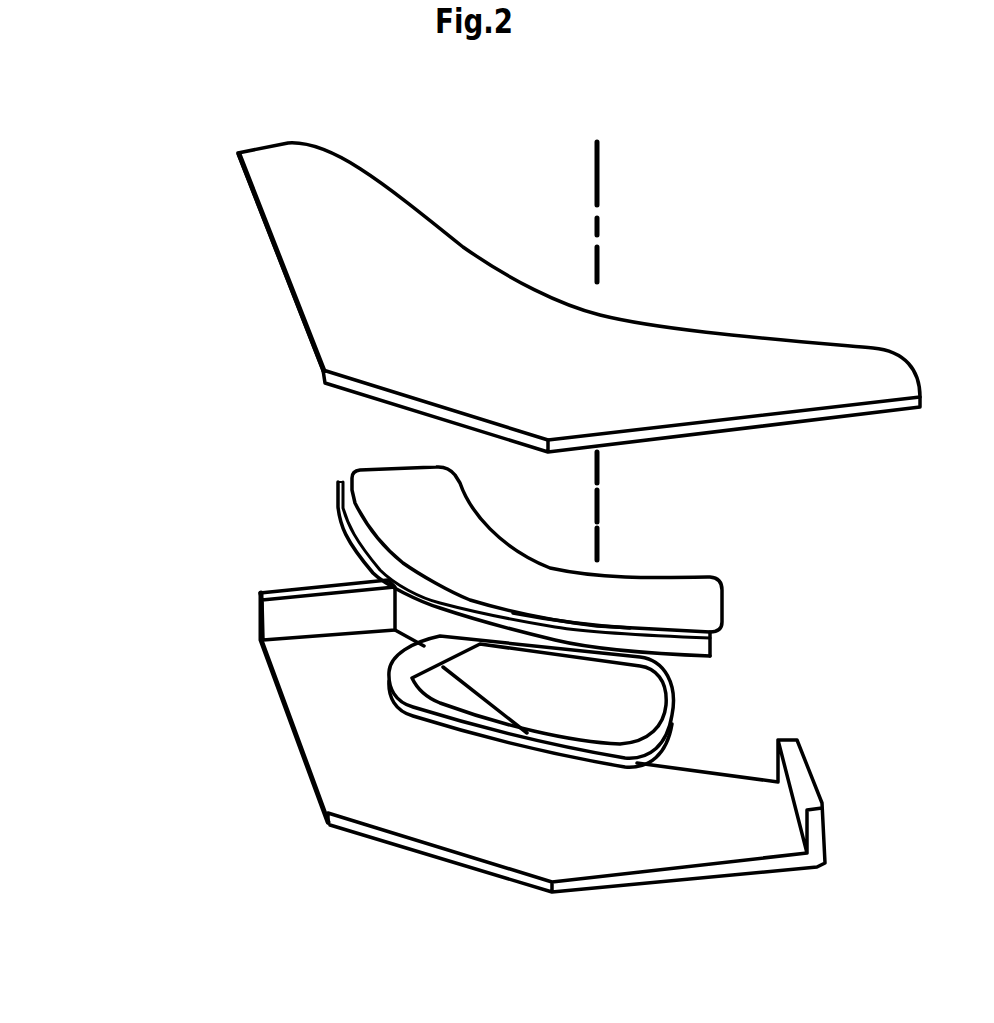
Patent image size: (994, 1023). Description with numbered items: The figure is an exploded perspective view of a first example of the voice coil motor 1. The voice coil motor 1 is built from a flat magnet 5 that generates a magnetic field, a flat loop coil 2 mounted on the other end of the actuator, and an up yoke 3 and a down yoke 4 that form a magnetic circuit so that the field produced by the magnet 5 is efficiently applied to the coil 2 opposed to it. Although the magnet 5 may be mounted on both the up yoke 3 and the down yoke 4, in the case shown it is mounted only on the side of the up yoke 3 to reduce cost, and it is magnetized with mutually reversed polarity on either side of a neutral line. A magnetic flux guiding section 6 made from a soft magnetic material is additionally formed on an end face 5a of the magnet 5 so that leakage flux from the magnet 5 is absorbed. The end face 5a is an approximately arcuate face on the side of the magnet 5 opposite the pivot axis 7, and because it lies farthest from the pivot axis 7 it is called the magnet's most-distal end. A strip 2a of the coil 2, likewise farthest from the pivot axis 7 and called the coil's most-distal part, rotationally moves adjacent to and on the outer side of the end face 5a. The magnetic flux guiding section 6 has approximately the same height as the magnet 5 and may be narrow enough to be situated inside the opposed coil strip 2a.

The voice coil motor 1 is at (70, 308).
The flat loop coil 2 is at (660, 702).
The coil strip 2a is at (490, 732).
The up yoke 3 is at (615, 365).
The down yoke 4 is at (563, 840).
The flat magnet 5 is at (690, 602).
The end face of the magnet 5a is at (560, 623).
The magnetic flux guiding section 6 is at (367, 553).
The pivot axis 7 is at (608, 188).